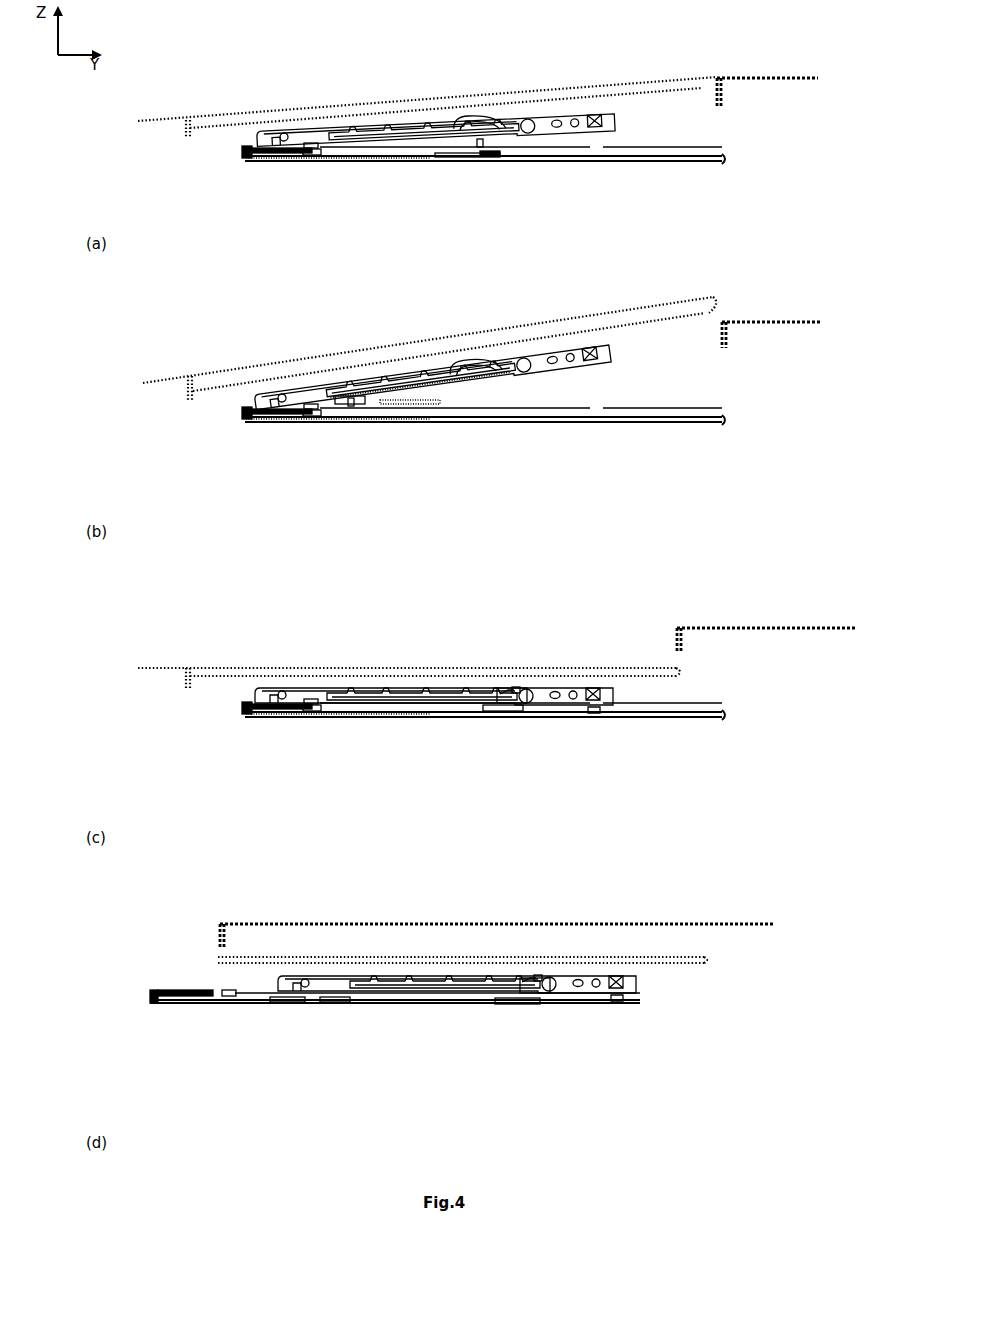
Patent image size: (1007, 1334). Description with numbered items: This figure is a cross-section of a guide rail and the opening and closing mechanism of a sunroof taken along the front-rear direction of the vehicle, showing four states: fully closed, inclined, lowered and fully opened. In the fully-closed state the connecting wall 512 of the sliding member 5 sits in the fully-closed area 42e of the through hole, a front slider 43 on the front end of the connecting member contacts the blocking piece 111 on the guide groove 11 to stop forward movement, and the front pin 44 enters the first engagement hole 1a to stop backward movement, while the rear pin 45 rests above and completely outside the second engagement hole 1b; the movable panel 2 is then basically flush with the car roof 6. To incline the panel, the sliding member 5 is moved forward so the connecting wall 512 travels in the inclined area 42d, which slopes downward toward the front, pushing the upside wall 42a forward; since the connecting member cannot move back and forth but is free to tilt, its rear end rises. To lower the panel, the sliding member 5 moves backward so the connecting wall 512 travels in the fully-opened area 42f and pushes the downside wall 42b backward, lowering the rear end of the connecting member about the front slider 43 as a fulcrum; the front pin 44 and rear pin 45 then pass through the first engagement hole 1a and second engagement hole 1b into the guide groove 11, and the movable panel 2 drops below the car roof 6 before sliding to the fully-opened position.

The movable panel 2 is at (216, 118).
The car roof 6 is at (758, 78).
The guide groove 11 is at (726, 155).
The second engagement hole 1b is at (596, 150).
The first engagement hole 1a is at (311, 148).
The blocking piece 111 is at (247, 158).
The front slider 43 is at (259, 157).
The front pin 44 is at (312, 153).
The upside wall 42a is at (470, 140).
The downside wall 42b is at (489, 156).
The inclined area 42d is at (415, 395).
The fully-closed area 42e is at (459, 137).
The fully-opened area 42f is at (505, 695).
The connecting wall 512 is at (480, 143).
The sliding member 5 is at (463, 158).
The rear pin 45 is at (594, 128).